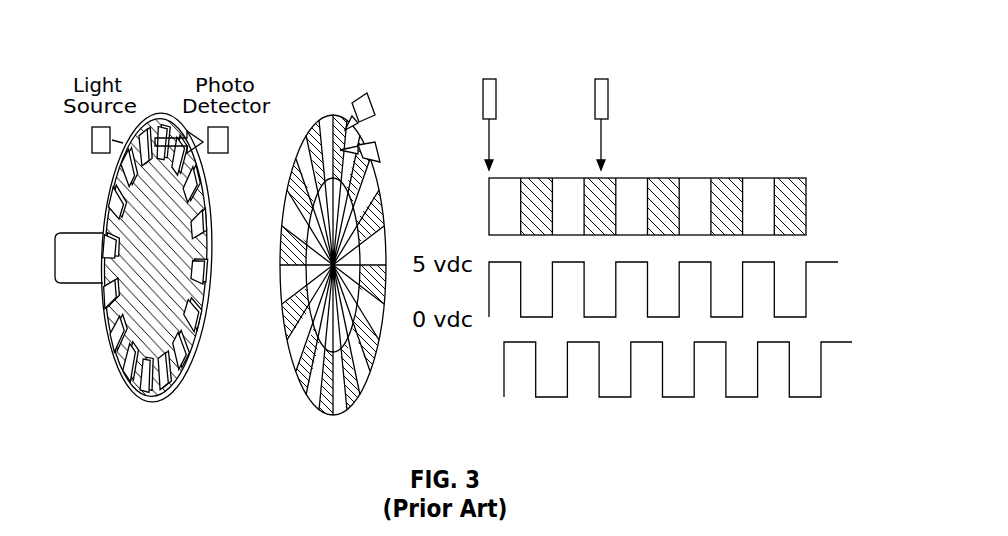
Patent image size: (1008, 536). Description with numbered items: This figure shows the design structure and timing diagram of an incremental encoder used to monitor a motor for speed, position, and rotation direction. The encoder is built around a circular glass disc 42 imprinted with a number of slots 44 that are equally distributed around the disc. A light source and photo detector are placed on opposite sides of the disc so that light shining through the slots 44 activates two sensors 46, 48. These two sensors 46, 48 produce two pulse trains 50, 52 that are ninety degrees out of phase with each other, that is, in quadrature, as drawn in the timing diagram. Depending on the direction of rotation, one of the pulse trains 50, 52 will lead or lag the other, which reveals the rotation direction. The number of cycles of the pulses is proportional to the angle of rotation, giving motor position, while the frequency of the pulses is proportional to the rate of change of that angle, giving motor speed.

The circular glass disc 42 is at (108, 343).
The slots 44 is at (201, 329).
The sensor 46 is at (358, 96).
The sensor 48 is at (368, 140).
The pulse train 50 is at (822, 250).
The pulse train 52 is at (834, 332).